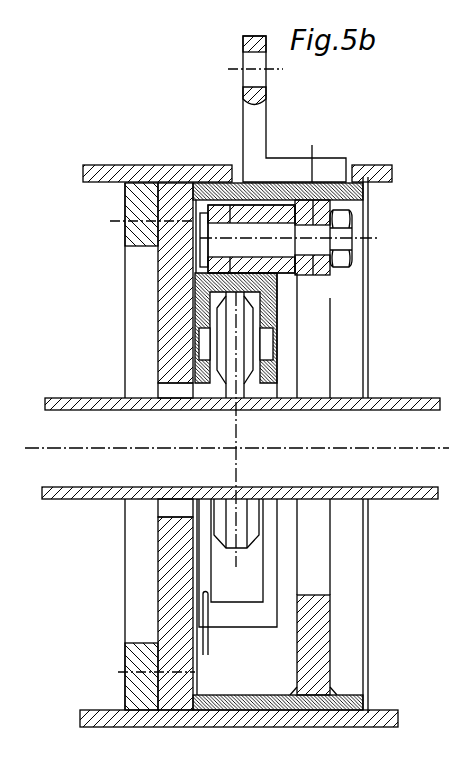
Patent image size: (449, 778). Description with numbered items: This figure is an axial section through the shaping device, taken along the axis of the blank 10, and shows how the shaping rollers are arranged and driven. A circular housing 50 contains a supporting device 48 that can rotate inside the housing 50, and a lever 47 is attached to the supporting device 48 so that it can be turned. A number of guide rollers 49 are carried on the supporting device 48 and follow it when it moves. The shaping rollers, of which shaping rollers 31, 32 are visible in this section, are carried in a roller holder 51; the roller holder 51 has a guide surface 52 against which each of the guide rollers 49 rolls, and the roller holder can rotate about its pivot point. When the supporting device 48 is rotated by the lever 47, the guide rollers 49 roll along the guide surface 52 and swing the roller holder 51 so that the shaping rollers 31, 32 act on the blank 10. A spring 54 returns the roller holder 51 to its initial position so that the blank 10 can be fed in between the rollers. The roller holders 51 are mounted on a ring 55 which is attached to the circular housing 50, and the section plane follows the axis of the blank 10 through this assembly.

The blank 10 is at (400, 398).
The shaping roller 31 is at (247, 336).
The shaping roller 32 is at (242, 533).
The lever 47 is at (262, 135).
The supporting device 48 is at (350, 202).
The guide roller 49 is at (331, 266).
The circular housing 50 is at (90, 170).
The roller holder 51 is at (195, 285).
The guide surface 52 is at (233, 201).
The spring 54 is at (208, 652).
The ring 55 is at (172, 192).